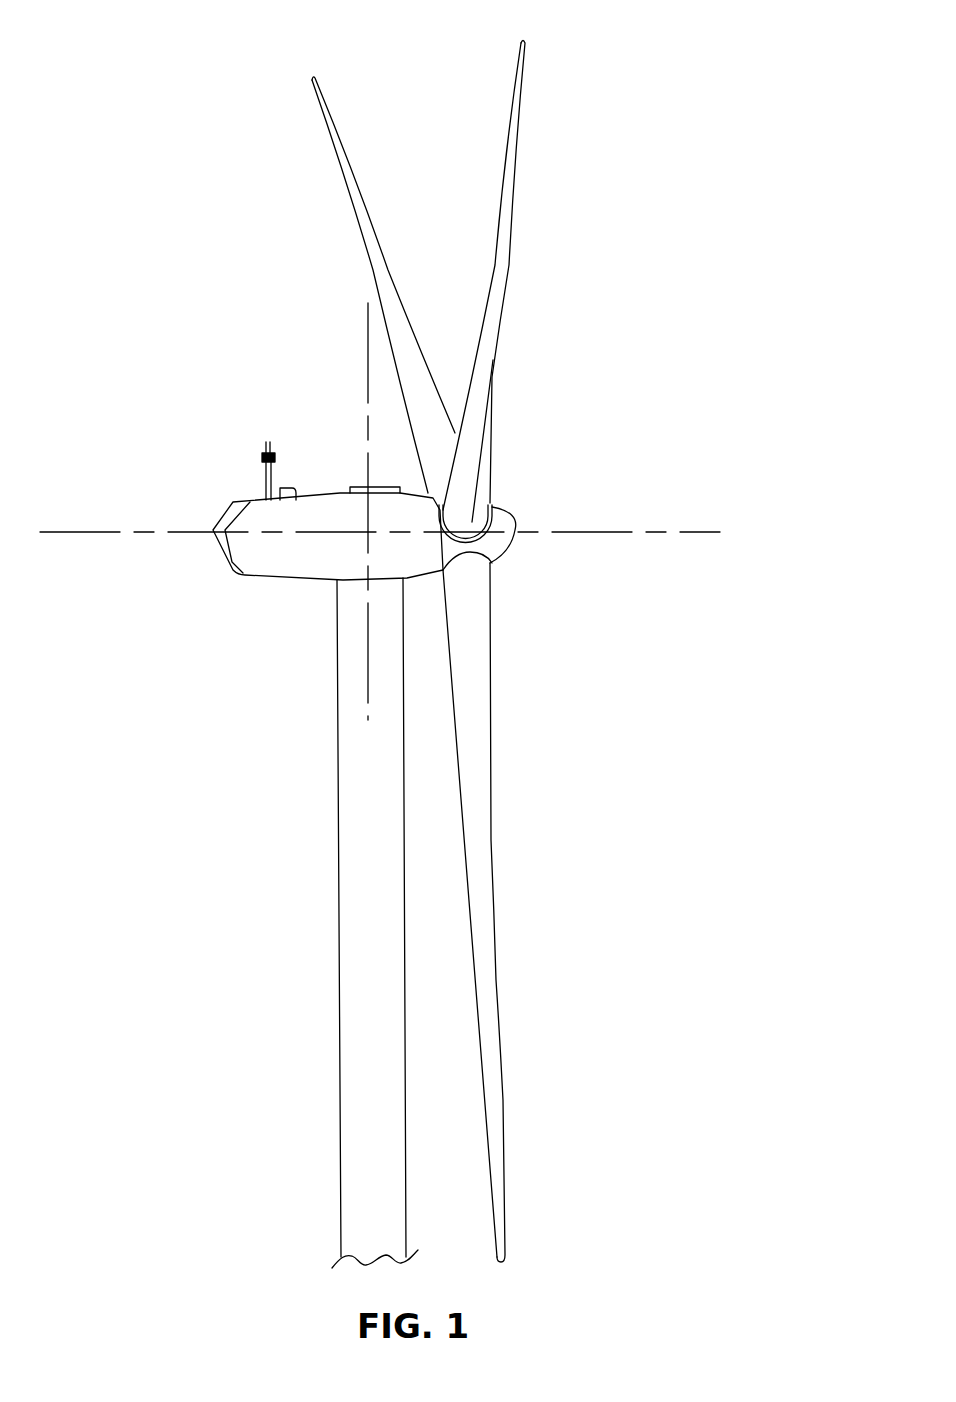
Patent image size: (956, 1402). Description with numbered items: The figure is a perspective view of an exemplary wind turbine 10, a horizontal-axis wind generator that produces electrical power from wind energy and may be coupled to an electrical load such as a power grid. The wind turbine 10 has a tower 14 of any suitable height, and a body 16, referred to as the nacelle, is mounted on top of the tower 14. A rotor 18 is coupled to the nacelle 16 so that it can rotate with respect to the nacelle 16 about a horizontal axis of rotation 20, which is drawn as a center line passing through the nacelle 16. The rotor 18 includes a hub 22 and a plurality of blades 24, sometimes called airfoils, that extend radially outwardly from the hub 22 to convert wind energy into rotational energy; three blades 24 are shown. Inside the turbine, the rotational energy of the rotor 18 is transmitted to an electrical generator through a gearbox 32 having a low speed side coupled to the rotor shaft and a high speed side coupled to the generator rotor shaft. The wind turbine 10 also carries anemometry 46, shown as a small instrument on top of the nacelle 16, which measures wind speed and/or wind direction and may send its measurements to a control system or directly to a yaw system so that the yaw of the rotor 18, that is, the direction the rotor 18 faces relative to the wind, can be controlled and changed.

The wind turbine 10 is at (387, 655).
The tower 14 is at (339, 869).
The body 16 is at (323, 531).
The rotor 18 is at (457, 652).
The axis of rotation 20 is at (660, 532).
The hub 22 is at (510, 542).
The blades 24 is at (352, 162).
The gearbox 32 is at (367, 328).
The anemometry 46 is at (262, 458).